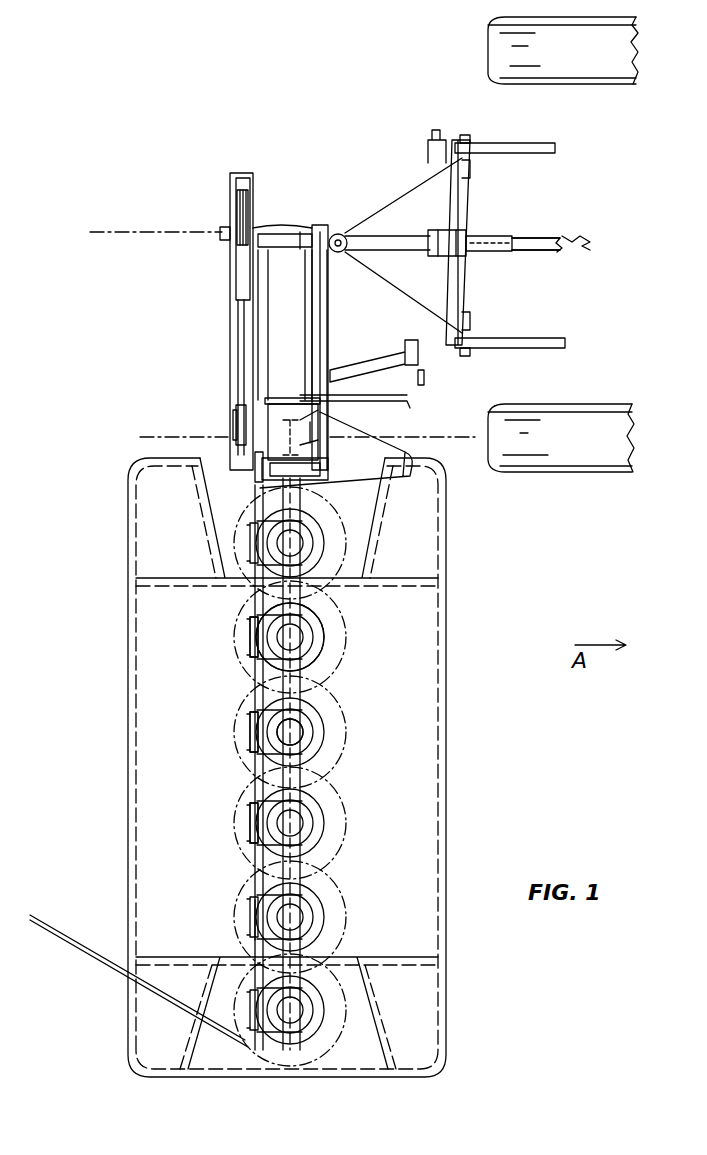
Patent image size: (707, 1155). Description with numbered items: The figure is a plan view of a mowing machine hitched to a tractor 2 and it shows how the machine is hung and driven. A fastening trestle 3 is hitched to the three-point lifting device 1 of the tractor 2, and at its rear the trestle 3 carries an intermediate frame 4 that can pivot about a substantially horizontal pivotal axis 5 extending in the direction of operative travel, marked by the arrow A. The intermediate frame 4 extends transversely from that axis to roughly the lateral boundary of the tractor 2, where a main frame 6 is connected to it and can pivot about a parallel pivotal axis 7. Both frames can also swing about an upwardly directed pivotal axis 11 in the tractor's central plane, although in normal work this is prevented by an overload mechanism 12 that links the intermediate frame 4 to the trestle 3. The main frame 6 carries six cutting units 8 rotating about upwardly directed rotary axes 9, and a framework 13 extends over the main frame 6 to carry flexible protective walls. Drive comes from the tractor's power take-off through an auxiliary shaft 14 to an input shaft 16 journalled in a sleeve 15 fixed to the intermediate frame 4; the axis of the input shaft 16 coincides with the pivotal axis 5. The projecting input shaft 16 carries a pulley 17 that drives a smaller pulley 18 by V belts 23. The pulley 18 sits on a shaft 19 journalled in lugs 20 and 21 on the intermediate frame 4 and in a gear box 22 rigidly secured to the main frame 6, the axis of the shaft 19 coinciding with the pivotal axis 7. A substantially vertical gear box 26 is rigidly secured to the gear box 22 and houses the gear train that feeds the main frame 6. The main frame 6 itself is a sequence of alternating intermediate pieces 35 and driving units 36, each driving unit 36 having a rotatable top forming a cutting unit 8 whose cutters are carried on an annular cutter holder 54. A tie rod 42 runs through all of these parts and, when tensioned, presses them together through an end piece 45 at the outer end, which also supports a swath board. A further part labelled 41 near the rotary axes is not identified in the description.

The three-point lifting device 1 is at (555, 226).
The tractor 2 is at (600, 472).
The fastening trestle 3 is at (398, 206).
The intermediate frame 4 is at (286, 324).
The pivotal axis 5 is at (126, 234).
The main frame 6 is at (245, 770).
The pivotal axis 7 is at (162, 444).
The cutting unit 8 is at (246, 862).
The rotary axis 9 is at (295, 835).
The pivotal axis 11 is at (339, 236).
The overload mechanism 12 is at (377, 352).
The framework 13 is at (446, 712).
The auxiliary shaft 14 is at (578, 258).
The sleeve 15 is at (306, 240).
The input shaft 16 is at (222, 241).
The pulley 17 is at (237, 192).
The pulley 18 is at (250, 460).
The shaft 19 is at (318, 424).
The lug 20 is at (254, 400).
The lug 21 is at (350, 436).
The gear box 22 is at (282, 410).
The V belt 23 is at (238, 322).
The gear box 26 is at (258, 482).
The intermediate piece 35 is at (250, 600).
The driving unit 36 is at (250, 712).
The roller axle 41 is at (292, 732).
The tie rod 42 is at (246, 797).
The end piece 45 is at (248, 1047).
The cutter holder 54 is at (325, 645).